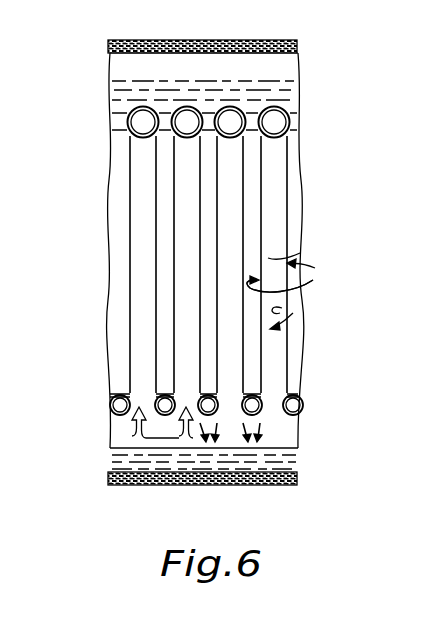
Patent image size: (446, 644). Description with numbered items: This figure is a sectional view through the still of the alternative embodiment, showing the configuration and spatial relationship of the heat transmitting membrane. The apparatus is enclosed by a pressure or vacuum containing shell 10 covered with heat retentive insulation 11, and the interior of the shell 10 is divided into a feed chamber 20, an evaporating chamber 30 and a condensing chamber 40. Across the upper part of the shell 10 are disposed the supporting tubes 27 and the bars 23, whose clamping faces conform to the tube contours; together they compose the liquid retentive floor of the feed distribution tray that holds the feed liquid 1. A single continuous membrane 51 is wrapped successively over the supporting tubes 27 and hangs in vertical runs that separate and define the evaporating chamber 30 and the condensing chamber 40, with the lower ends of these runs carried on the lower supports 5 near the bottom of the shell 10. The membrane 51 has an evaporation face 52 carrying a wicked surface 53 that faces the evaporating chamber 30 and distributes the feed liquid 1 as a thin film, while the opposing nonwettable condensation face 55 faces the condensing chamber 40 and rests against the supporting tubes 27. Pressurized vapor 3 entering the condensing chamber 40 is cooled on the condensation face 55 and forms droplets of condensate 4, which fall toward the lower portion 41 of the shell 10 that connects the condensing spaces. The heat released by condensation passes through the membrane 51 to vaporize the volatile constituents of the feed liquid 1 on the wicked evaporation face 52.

The feed liquid 1 is at (237, 93).
The pressurized vapor 3 is at (132, 438).
The droplets of condensate 4 is at (281, 465).
The lower tubes 5 is at (255, 388).
The shell 10 is at (299, 53).
The heat retentive insulation 11 is at (135, 41).
The feed chamber 20 is at (183, 58).
The bars 23 is at (297, 129).
The supporting tubes 27 is at (288, 118).
The evaporating chamber 30 is at (208, 233).
The condensing chamber 40 is at (273, 213).
The lower portion of the shell 41 is at (194, 486).
The membrane 51 is at (287, 252).
The evaporation face 52 is at (298, 268).
The wicked surface 53 is at (309, 278).
The condensation face 55 is at (293, 313).